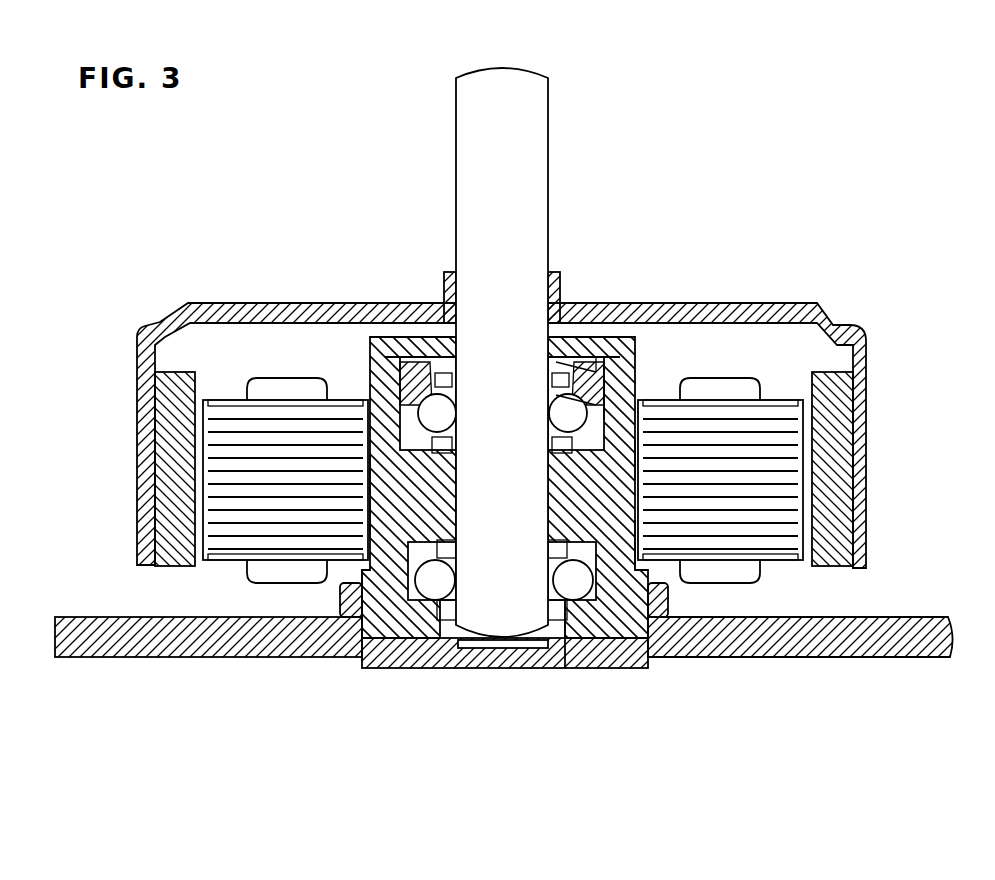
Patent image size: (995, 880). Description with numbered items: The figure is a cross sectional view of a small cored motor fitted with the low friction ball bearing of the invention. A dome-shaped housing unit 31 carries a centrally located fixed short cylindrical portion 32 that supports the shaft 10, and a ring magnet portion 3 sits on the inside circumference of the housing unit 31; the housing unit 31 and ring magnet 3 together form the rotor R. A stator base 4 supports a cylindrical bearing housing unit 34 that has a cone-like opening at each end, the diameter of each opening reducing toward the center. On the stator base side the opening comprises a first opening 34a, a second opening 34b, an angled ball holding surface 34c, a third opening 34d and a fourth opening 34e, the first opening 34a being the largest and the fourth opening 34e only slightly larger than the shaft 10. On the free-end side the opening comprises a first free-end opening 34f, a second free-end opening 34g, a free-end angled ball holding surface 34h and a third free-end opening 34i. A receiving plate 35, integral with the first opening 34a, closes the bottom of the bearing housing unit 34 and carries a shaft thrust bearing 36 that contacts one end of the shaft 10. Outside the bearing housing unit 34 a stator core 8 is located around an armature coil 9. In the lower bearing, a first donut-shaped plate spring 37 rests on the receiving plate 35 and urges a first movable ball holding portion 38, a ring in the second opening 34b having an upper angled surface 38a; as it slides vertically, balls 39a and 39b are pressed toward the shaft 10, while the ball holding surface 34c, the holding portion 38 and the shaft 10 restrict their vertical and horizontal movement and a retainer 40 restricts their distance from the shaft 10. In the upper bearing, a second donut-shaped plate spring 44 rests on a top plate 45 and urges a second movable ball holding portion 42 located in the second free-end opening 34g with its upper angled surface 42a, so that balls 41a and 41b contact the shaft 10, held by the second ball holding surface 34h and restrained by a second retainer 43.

The ring magnet portion 3 is at (160, 405).
The stator base 4 is at (915, 660).
The stator core 8 is at (225, 423).
The armature coil 9 is at (282, 387).
The shaft 10 is at (520, 125).
The housing unit 31 is at (795, 310).
The fixed short cylindrical portion 32 is at (553, 272).
The cylindrical bearing housing unit 34 is at (660, 655).
The first opening 34a is at (607, 672).
The second opening 34b is at (610, 605).
The angled ball holding surface 34c is at (600, 545).
The third opening 34d is at (455, 525).
The fourth opening 34e is at (458, 478).
The first free-end opening 34f is at (597, 363).
The second free-end opening 34g is at (603, 408).
The free-end angled ball holding surface 34h is at (600, 445).
The third free-end opening 34i is at (600, 470).
The receiving plate 35 is at (538, 663).
The shaft thrust bearing 36 is at (487, 647).
The first donut-shaped plate spring 37 is at (587, 627).
The first movable ball holding portion 38 is at (430, 593).
The upper angled surface 38a is at (432, 610).
The ball 39a is at (612, 672).
The ball 39b is at (355, 592).
The retainer 40 is at (448, 607).
The ball 41a is at (560, 405).
The ball 41b is at (430, 418).
The second movable ball holding portion 42 is at (592, 402).
The upper angled surface 42a is at (600, 465).
The second retainer 43 is at (438, 383).
The second donut-shaped plate spring 44 is at (417, 363).
The top plate 45 is at (388, 335).
The rotor R is at (777, 297).